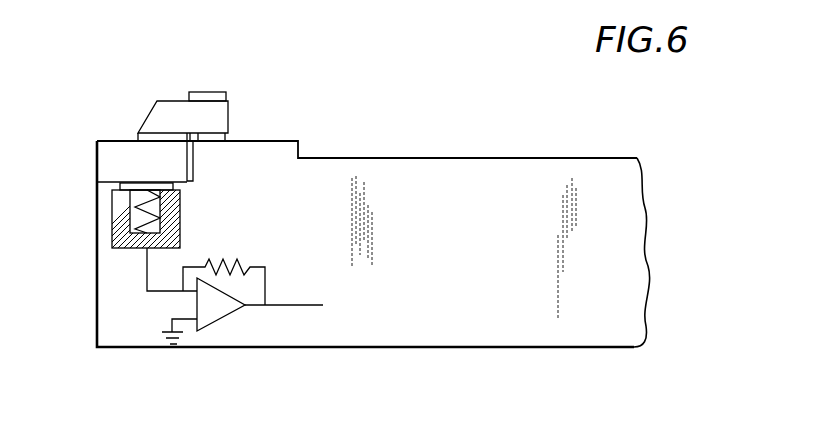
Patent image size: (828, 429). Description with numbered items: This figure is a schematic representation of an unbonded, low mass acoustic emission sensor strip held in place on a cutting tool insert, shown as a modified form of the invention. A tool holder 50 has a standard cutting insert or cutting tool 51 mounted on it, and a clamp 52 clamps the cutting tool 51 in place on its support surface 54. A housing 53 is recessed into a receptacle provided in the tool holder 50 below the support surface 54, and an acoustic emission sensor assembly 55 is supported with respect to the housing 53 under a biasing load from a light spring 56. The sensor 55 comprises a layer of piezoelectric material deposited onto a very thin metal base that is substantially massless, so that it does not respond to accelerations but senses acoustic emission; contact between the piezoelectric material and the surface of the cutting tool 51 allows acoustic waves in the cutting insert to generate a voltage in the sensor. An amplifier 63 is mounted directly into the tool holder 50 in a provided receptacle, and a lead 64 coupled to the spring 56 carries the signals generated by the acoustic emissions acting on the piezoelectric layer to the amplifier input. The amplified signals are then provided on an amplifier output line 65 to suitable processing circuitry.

The tool holder 50 is at (510, 173).
The cutting tool 51 is at (115, 153).
The clamp 52 is at (229, 112).
The housing 53 is at (112, 213).
The support surface 54 is at (194, 180).
The acoustic emission sensor assembly 55 is at (140, 183).
The light spring 56 is at (137, 225).
The amplifier 63 is at (215, 313).
The lead 64 is at (147, 278).
The amplifier output line 65 is at (323, 307).